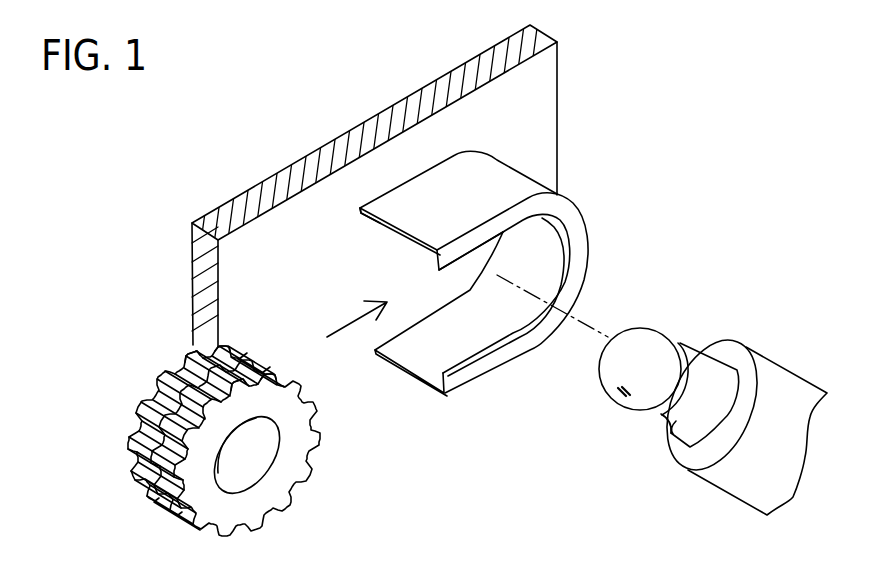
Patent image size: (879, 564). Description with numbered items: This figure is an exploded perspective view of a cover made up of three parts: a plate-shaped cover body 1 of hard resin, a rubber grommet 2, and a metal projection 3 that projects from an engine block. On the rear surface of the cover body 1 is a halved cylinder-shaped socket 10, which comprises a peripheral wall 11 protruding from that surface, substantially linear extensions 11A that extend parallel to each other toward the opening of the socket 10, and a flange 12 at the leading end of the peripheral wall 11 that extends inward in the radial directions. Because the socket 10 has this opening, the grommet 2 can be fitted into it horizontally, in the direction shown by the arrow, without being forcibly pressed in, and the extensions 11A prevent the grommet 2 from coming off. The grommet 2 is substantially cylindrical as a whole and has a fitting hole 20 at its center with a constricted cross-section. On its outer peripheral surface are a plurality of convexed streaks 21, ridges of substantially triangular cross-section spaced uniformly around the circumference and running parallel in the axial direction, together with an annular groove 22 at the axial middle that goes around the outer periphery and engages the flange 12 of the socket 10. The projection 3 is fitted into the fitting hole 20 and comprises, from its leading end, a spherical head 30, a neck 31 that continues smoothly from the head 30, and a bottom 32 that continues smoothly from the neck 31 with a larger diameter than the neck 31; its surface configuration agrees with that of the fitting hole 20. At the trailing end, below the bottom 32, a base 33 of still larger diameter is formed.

The cover body 1 is at (540, 106).
The socket 10 is at (465, 258).
The peripheral wall 11 is at (434, 170).
The extensions 11A is at (364, 211).
The flange 12 is at (437, 263).
The grommet 2 is at (244, 407).
The fitting hole 20 is at (268, 430).
The convexed streaks 21 is at (222, 358).
The annular groove 22 is at (268, 373).
The projection 3 is at (706, 381).
The spherical head 30 is at (656, 338).
The neck 31 is at (661, 415).
The bottom 32 is at (664, 422).
The base 33 is at (765, 380).